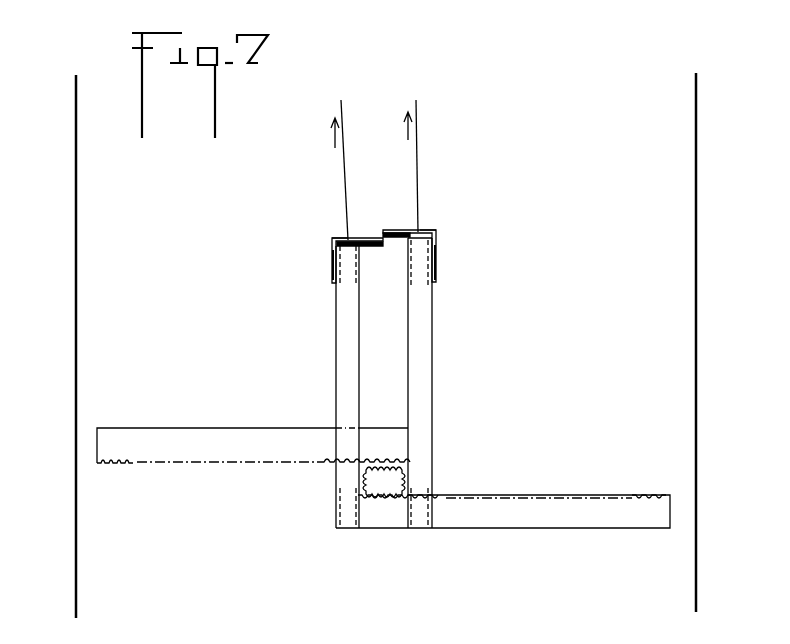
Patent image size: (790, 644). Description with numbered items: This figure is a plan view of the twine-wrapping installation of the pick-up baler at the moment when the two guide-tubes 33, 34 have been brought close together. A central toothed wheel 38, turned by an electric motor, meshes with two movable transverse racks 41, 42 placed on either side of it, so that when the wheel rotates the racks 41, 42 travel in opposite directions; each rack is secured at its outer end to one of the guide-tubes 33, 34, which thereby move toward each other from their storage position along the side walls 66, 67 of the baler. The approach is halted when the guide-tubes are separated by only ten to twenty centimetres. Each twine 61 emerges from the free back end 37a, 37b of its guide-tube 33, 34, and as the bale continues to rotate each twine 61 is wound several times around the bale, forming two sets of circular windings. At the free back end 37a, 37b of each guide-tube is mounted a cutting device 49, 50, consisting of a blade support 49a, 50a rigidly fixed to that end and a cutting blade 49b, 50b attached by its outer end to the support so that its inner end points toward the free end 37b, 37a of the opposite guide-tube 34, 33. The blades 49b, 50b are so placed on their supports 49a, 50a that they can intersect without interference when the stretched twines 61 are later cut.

The guide-tube 33 is at (432, 365).
The guide-tube 34 is at (335, 350).
The free back end of guide-tube 37a is at (435, 235).
The free back end of guide-tube 37b is at (337, 238).
The central toothed wheel 38 is at (387, 477).
The movable transverse rack 41 is at (192, 447).
The movable transverse rack 42 is at (527, 503).
The cutting device 49 is at (451, 257).
The blade support 49a is at (398, 228).
The cutting blade 49b is at (435, 267).
The cutting device 50 is at (312, 266).
The blade support 50a is at (332, 268).
The cutting blade 50b is at (368, 240).
The twine 61 is at (345, 184).
The side wall 66 is at (697, 163).
The side wall 67 is at (75, 178).